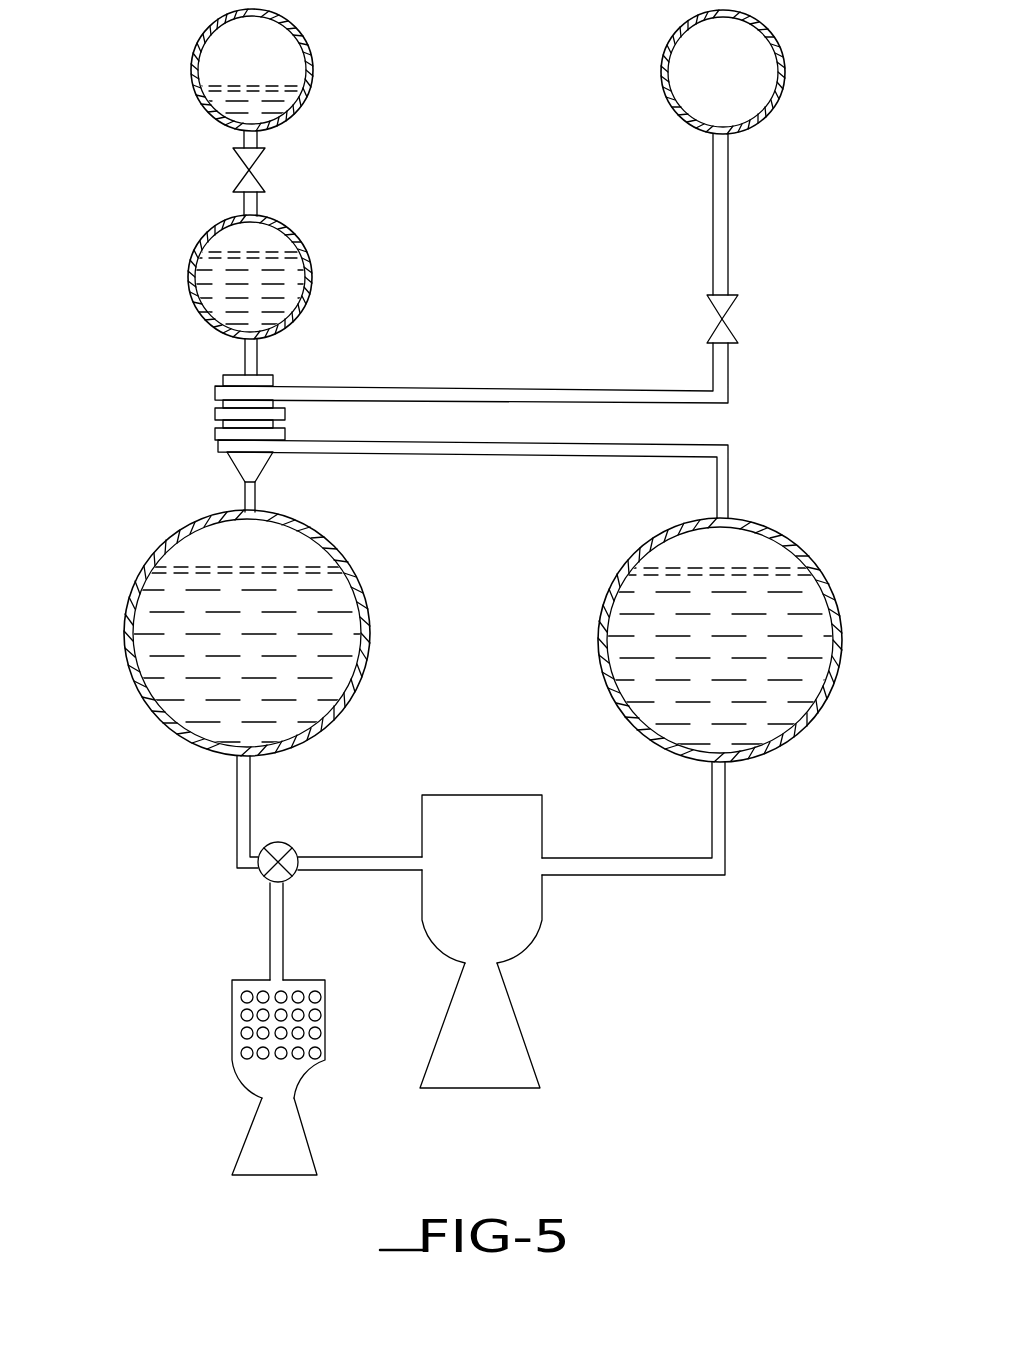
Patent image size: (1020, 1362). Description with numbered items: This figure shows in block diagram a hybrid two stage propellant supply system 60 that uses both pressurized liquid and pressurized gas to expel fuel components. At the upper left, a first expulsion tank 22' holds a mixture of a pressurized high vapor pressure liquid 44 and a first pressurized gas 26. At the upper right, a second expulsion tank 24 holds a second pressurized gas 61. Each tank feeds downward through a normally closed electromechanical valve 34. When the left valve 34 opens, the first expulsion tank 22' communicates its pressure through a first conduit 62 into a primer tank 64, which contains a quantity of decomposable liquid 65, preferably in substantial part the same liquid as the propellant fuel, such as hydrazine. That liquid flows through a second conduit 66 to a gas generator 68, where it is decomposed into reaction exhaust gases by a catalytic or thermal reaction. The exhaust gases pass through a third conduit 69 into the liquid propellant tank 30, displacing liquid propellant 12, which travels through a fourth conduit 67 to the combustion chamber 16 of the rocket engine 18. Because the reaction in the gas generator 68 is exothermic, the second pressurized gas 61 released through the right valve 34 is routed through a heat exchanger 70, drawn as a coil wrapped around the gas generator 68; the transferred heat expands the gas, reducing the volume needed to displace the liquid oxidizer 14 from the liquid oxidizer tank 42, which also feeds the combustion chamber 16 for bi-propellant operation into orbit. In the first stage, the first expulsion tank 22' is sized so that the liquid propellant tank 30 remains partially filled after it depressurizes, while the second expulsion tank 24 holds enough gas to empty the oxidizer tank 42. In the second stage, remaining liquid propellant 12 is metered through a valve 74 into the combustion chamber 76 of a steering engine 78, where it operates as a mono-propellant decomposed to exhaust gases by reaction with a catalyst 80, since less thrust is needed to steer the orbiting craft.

The liquid propellant 12 is at (343, 643).
The liquid oxidizer 14 is at (810, 667).
The combustion chamber 16 is at (488, 800).
The rocket engine 18 is at (436, 977).
The first expulsion tank 22' is at (247, 77).
The second expulsion tank 24 is at (721, 85).
The first pressurized gas 26 is at (293, 65).
The liquid propellant tank 30 is at (244, 633).
The valve 34 is at (240, 181).
The liquid oxidizer tank 42 is at (753, 640).
The pressurized high vapor pressure liquid 44 is at (280, 100).
The propellant supply system 60 is at (487, 40).
The second pressurized gas 61 is at (765, 80).
The first conduit 62 is at (252, 207).
The primer tank 64 is at (254, 277).
The decomposable liquid 65 is at (293, 287).
The second conduit 66 is at (248, 357).
The fourth conduit 67 is at (378, 860).
The gas generator 68 is at (247, 460).
The third conduit 69 is at (252, 500).
The heat exchanger 70 is at (342, 387).
The valve 74 is at (282, 850).
The combustion chamber 76 is at (272, 1039).
The steering engine 78 is at (236, 1118).
The catalyst 80 is at (258, 1015).